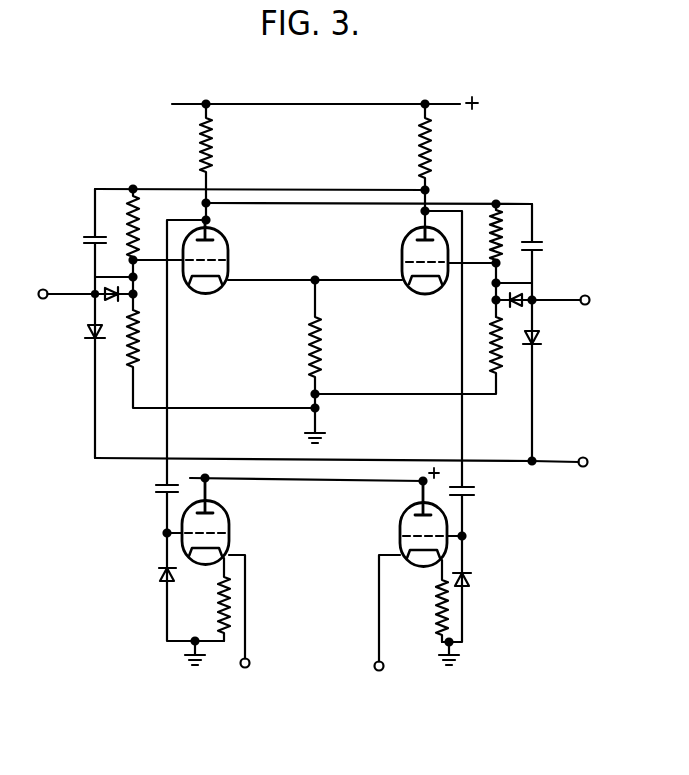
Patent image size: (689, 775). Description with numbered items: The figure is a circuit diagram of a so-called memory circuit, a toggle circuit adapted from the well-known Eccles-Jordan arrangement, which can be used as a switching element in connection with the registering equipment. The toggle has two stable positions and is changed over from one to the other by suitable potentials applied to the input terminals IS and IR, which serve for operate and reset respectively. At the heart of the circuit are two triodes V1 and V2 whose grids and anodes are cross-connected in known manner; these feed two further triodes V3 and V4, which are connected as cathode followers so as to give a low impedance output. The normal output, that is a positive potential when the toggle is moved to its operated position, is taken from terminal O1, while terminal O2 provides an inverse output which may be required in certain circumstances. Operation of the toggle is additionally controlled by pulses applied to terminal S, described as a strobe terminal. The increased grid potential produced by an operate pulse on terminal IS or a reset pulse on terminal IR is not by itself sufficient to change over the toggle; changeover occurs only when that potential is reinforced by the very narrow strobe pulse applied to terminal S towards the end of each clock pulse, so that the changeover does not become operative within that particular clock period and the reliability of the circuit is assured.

The triode V1 is at (221, 257).
The triode V2 is at (408, 260).
The triode V3 is at (221, 521).
The triode V4 is at (405, 524).
The input terminal IS is at (62, 312).
The input terminal IR is at (561, 317).
The strobe terminal S is at (560, 478).
The terminal O1 is at (380, 631).
The terminal O2 is at (245, 627).